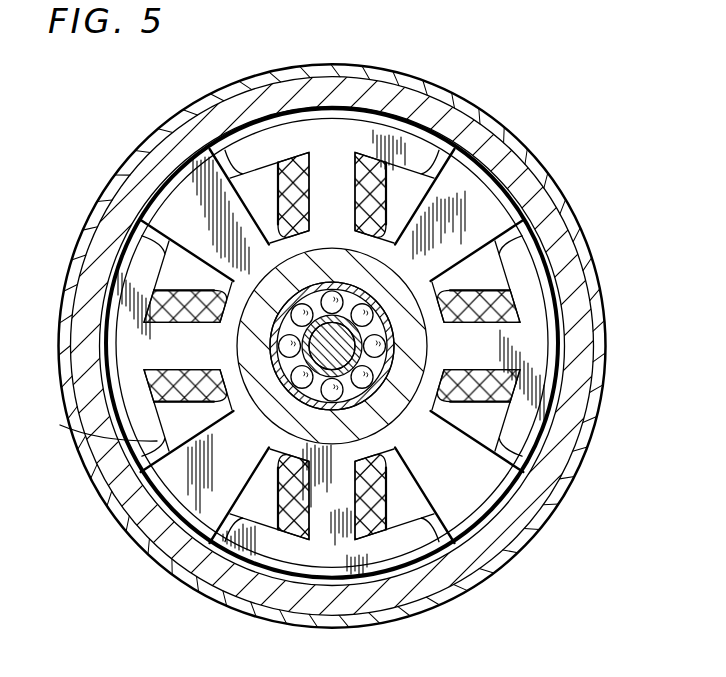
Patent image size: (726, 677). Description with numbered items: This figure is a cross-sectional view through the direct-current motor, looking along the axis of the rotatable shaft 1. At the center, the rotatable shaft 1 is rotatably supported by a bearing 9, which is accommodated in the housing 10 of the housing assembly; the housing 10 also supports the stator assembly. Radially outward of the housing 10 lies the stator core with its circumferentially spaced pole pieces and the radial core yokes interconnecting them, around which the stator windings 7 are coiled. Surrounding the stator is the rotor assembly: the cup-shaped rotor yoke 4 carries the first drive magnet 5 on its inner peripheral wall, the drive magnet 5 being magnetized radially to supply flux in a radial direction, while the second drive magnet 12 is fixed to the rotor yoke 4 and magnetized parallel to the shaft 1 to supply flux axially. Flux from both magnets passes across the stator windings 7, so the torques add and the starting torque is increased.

The rotatable shaft 1 is at (370, 380).
The rotor yoke 4 is at (187, 115).
The drive magnet 5 is at (130, 195).
The stator windings 7 is at (170, 420).
The bearing 9 is at (348, 380).
The housing 10 is at (275, 407).
The second drive magnet 12 is at (450, 157).